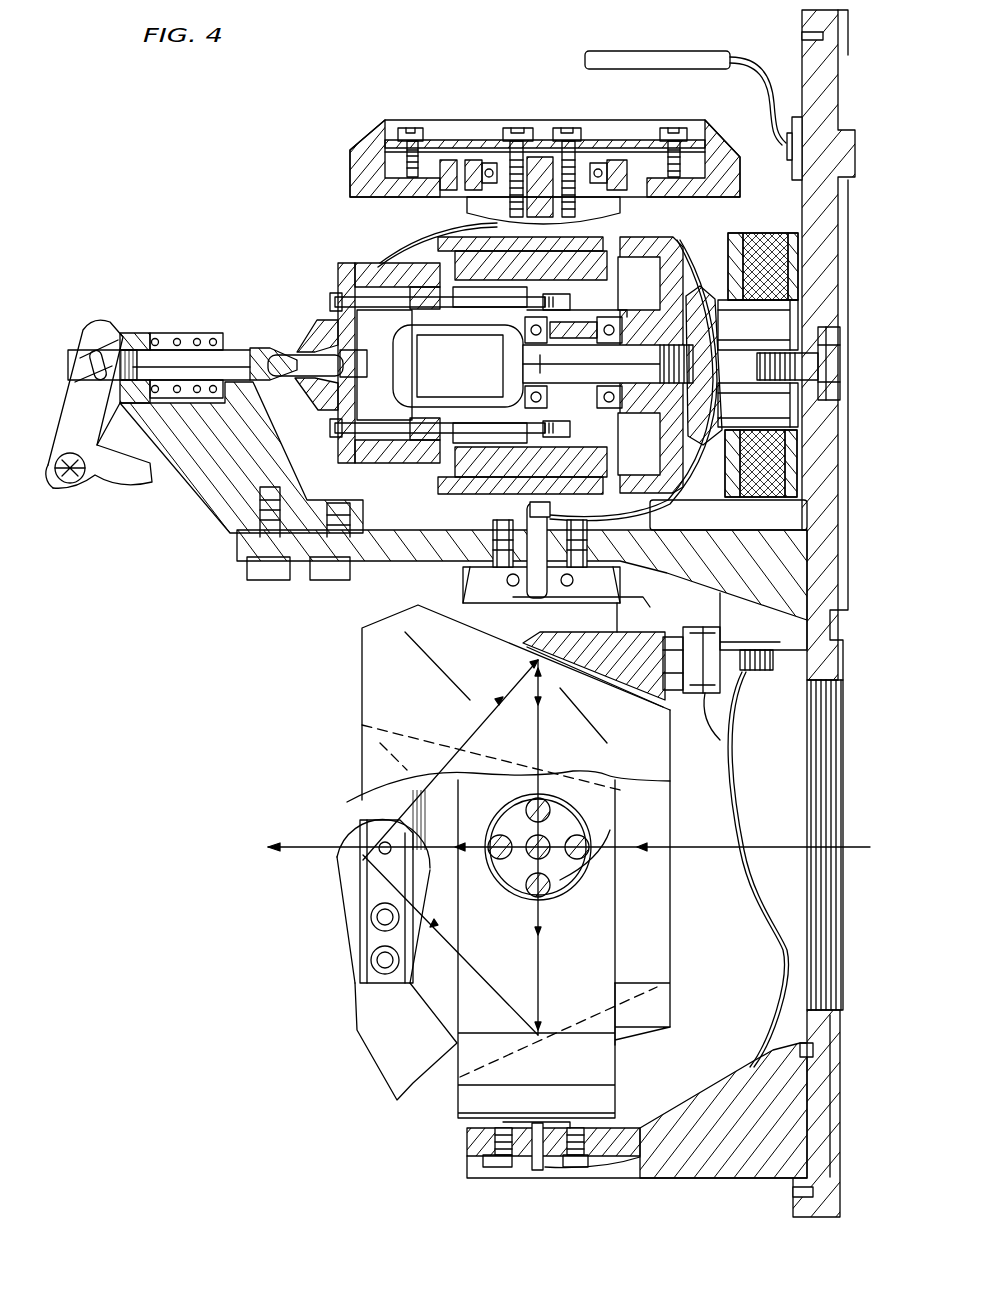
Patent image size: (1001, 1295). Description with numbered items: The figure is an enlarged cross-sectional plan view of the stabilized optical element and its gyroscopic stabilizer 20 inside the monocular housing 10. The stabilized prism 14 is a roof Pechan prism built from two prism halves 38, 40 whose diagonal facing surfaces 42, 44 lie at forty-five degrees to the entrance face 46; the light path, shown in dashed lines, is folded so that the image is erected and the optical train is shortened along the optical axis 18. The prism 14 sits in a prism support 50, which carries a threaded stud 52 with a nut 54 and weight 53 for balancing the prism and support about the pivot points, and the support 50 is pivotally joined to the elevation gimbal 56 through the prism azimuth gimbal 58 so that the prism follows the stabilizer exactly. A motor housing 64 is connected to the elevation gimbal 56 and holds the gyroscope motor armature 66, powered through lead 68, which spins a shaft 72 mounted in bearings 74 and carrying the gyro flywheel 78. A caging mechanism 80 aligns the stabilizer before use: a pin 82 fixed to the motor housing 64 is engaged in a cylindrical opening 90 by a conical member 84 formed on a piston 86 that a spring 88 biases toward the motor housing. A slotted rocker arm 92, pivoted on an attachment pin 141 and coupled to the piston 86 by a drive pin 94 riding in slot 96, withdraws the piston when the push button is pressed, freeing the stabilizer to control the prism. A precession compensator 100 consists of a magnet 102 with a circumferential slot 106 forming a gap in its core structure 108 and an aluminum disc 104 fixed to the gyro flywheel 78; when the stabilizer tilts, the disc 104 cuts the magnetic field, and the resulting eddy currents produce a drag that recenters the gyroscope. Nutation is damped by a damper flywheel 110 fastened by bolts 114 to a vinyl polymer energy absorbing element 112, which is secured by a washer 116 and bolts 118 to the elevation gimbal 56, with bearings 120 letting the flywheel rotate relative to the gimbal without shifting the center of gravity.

The monocular housing 10 is at (848, 156).
The stabilized prism 14 is at (343, 778).
The optical axis 18 is at (292, 852).
The gyroscopic stabilizer 20 is at (275, 262).
The prism half 38 is at (508, 820).
The prism half 40 is at (536, 949).
The diagonal facing surface 42 is at (603, 782).
The diagonal facing surface 44 is at (585, 797).
The entrance face 46 is at (672, 950).
The prism support 50 is at (655, 1014).
The threaded stud 52 is at (760, 657).
The weight 53 is at (710, 695).
The nut 54 is at (735, 678).
The elevation gimbal 56 is at (603, 1077).
The prism azimuth gimbal 58 is at (568, 893).
The motor housing 64 is at (348, 262).
The gyroscope motor armature 66 is at (458, 366).
The lead 68 is at (440, 232).
The shaft 72 is at (608, 359).
The bearing 74 is at (583, 395).
The gyro flywheel 78 is at (642, 240).
The caging mechanism 80 is at (200, 255).
The pin 82 is at (302, 365).
The conical member 84 is at (323, 410).
The piston 86 is at (191, 312).
The spring 88 is at (157, 308).
The cylindrical opening 90 is at (273, 358).
The slotted rocker arm 92 is at (78, 325).
The drive pin 94 is at (100, 350).
The slot 96 is at (90, 372).
The precession compensator 100 is at (737, 224).
The magnet 102 is at (766, 233).
The aluminum disc 104 is at (690, 252).
The circumferential slot 106 is at (722, 426).
The core structure 108 is at (724, 352).
The damper flywheel 110 is at (370, 143).
The energy absorbing element 112 is at (490, 162).
The bolts 114 is at (407, 128).
The washer 116 is at (500, 140).
The bolts 118 is at (562, 133).
The bearings 120 is at (598, 160).
The attachment pin 141 is at (70, 483).